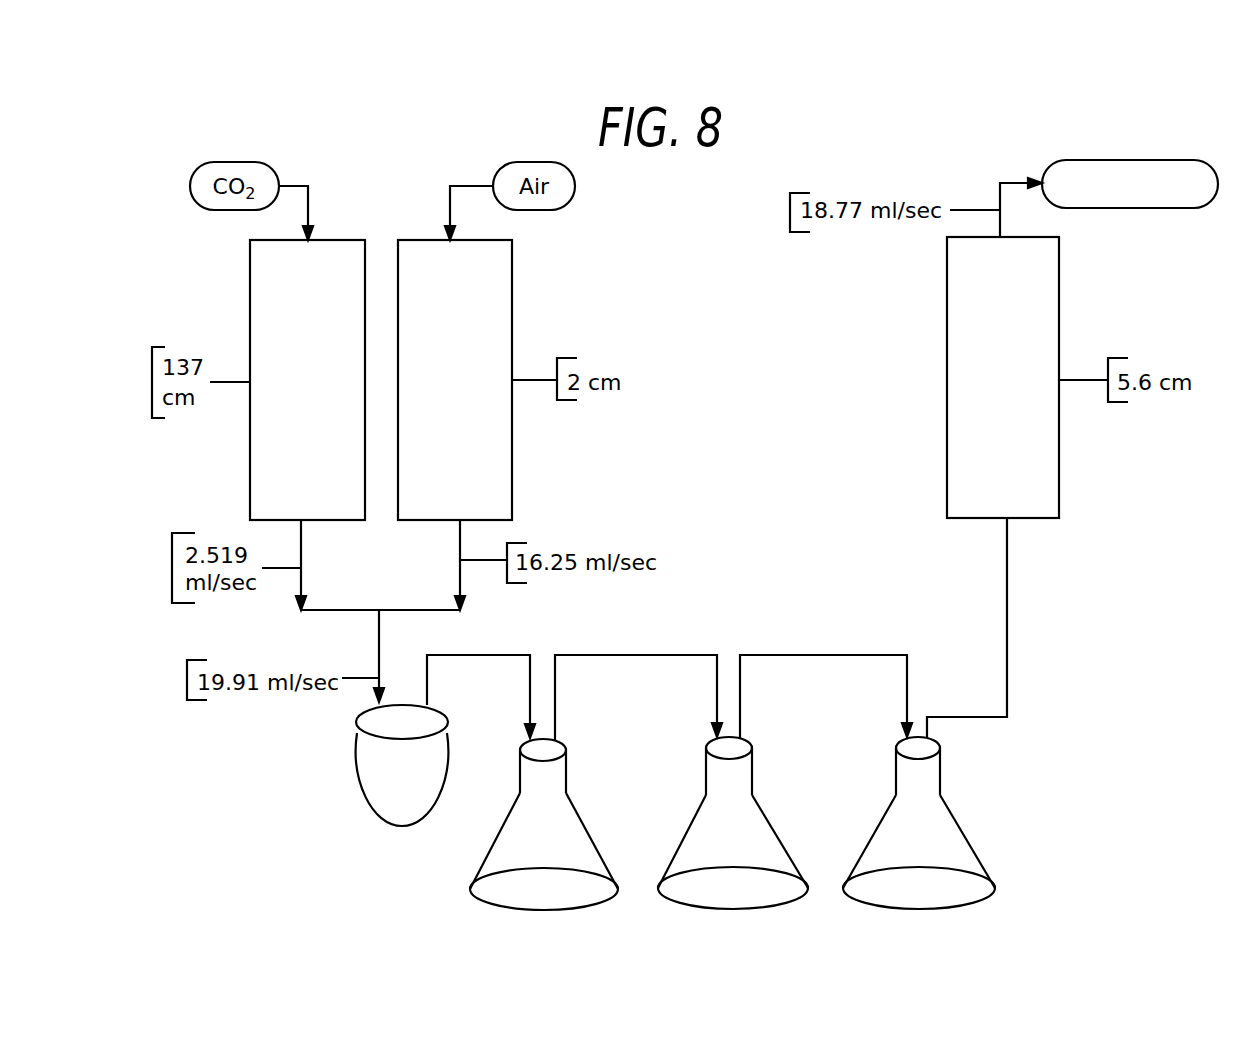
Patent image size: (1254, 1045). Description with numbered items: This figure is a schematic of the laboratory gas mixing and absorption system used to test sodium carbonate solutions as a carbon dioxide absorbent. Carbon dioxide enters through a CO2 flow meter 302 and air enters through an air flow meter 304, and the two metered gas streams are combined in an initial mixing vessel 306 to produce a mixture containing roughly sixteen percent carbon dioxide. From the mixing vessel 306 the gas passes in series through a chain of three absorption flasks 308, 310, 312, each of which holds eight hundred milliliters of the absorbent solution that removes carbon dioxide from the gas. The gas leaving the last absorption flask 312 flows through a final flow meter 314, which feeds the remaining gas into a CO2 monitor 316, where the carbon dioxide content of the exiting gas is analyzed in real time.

The CO2 flow meter 302 is at (328, 260).
The air flow meter 304 is at (500, 295).
The mixing vessel 306 is at (368, 767).
The absorption flask 308 is at (500, 858).
The absorption flask 310 is at (702, 828).
The absorption flask 312 is at (900, 810).
The final flow meter 314 is at (1060, 307).
The CO2 monitor 316 is at (1105, 160).